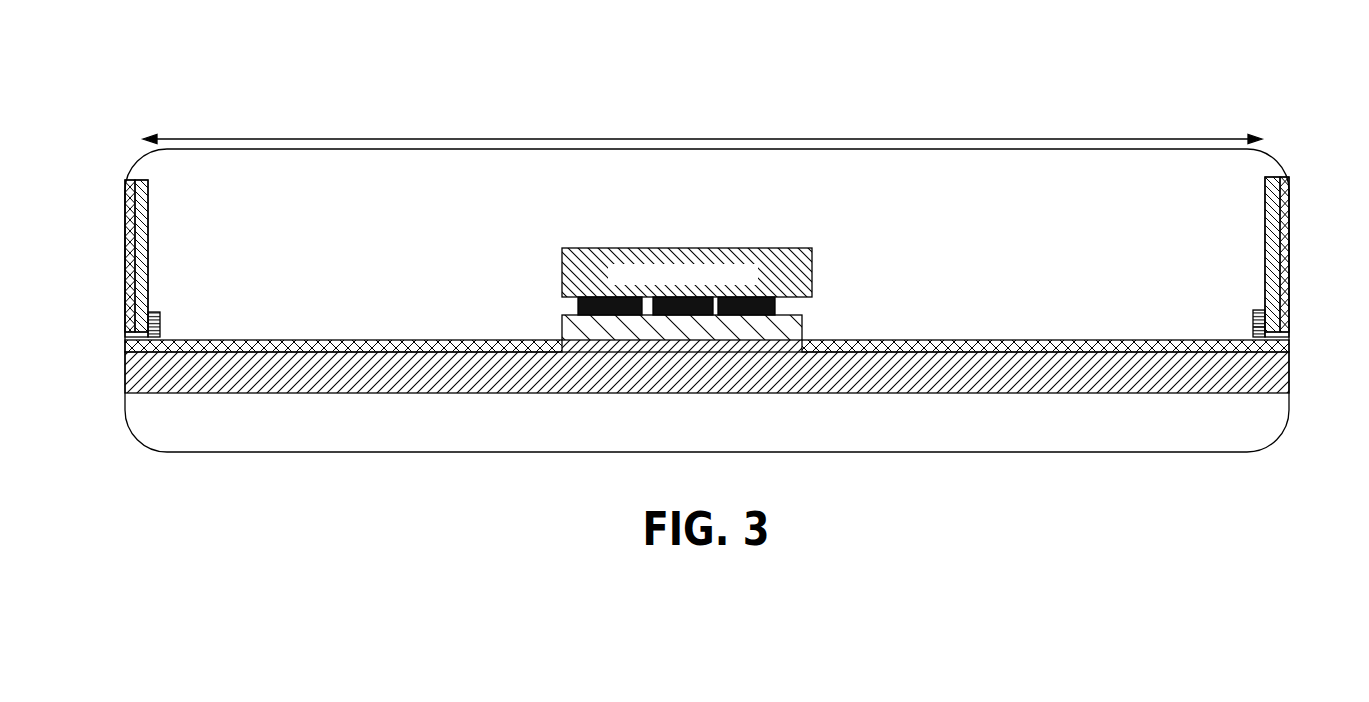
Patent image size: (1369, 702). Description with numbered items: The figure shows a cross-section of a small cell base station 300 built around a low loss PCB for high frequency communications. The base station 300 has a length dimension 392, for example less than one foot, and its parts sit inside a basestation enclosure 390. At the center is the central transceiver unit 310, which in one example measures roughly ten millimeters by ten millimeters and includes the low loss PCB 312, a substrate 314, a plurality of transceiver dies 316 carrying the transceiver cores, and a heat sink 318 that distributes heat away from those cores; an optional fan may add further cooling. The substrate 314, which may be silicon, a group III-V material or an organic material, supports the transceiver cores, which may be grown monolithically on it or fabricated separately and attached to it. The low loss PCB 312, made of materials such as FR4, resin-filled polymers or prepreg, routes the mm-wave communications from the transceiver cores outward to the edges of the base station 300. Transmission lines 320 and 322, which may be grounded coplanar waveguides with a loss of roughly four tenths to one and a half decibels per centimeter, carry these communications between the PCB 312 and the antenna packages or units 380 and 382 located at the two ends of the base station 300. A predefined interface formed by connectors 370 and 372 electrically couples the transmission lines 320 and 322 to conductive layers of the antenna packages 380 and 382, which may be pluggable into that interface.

The base station 300 is at (702, 260).
The central transceiver unit 310 is at (662, 203).
The low loss PCB 312 is at (578, 389).
The substrate 314 is at (561, 325).
The transceiver dies 316 is at (793, 410).
The heat sink 318 is at (752, 283).
The transmission line 320 is at (988, 347).
The transmission line 322 is at (355, 340).
The connector 370 is at (1251, 324).
The connector 372 is at (162, 324).
The antenna package 380 is at (1300, 217).
The antenna package 382 is at (112, 256).
The basestation enclosure 390 is at (1153, 235).
The length dimension 392 is at (1045, 139).